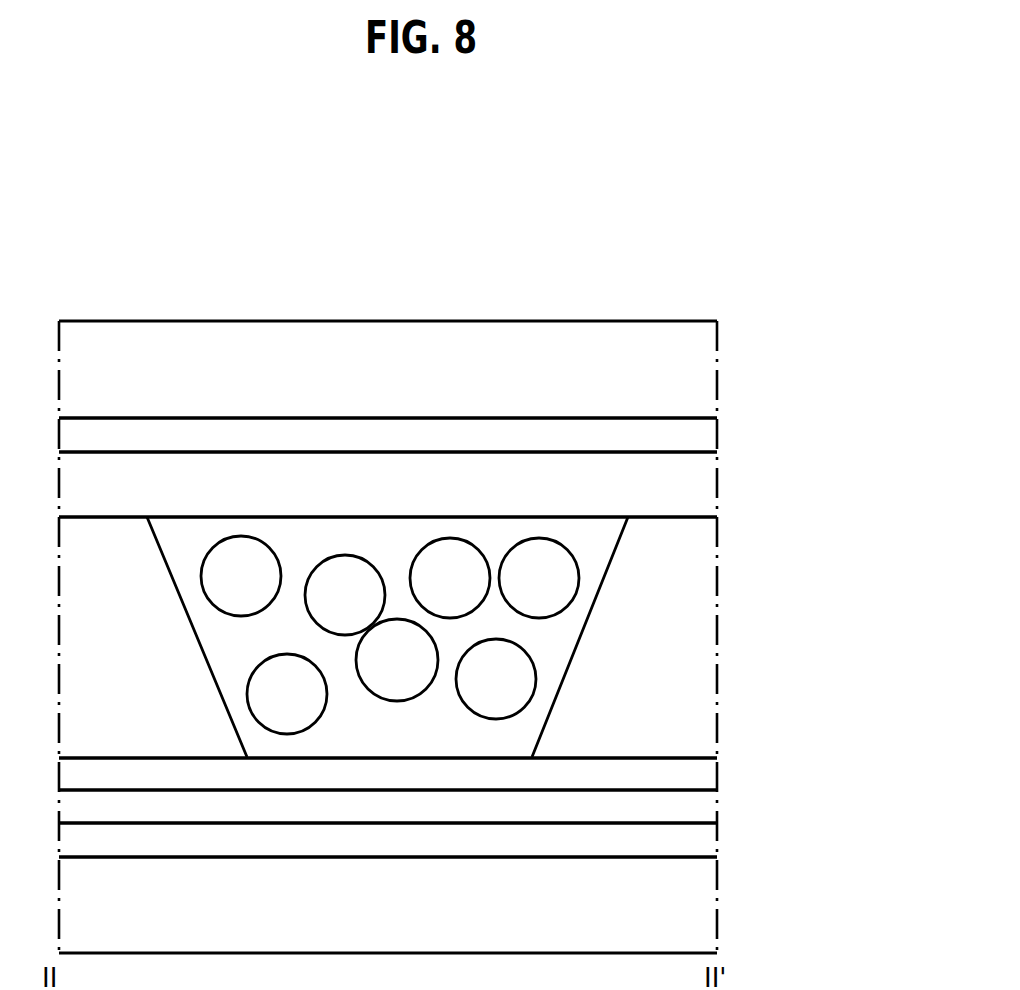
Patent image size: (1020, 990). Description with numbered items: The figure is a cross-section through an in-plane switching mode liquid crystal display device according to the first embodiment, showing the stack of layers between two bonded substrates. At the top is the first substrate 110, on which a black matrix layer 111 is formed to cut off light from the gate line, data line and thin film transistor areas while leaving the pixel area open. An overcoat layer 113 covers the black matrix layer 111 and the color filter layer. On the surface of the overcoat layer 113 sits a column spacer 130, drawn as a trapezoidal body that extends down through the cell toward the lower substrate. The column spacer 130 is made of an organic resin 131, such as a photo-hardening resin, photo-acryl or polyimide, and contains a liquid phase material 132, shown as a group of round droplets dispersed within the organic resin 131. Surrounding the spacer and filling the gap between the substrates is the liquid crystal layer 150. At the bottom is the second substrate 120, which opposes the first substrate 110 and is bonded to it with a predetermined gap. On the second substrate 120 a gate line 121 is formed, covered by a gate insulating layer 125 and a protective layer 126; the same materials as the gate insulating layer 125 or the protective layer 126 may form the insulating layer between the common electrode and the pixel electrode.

The first substrate 110 is at (708, 368).
The black matrix layer 111 is at (708, 443).
The overcoat layer 113 is at (708, 494).
The second substrate 120 is at (708, 904).
The gate line 121 is at (708, 844).
The gate insulating layer 125 is at (708, 807).
The protective layer 126 is at (708, 775).
The column spacer 130 is at (502, 637).
The organic resin 131 is at (557, 637).
The liquid phase material 132 is at (557, 580).
The liquid crystal layer 150 is at (708, 714).